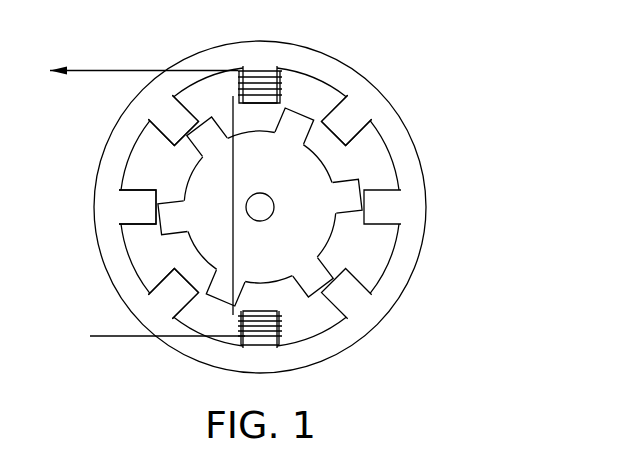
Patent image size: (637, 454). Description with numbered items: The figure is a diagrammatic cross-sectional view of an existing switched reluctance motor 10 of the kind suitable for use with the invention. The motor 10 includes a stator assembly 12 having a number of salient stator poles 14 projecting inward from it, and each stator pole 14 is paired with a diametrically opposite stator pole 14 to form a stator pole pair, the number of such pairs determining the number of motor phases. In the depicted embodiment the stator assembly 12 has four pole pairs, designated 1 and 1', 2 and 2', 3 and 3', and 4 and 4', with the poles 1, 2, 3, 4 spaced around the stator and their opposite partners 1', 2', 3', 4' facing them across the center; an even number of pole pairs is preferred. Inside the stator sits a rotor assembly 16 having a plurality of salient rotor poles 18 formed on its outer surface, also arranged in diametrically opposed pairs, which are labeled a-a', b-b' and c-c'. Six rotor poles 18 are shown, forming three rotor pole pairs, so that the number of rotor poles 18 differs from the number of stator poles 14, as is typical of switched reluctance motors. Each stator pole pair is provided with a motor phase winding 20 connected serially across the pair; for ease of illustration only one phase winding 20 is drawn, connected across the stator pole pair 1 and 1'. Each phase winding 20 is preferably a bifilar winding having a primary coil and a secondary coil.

The switched reluctance motor 10 is at (503, 310).
The stator assembly 12 is at (427, 218).
The stator pole 14 is at (150, 131).
The rotor assembly 16 is at (314, 168).
The rotor pole 18 is at (160, 227).
The motor phase winding 20 is at (112, 70).
The stator pole of pole pair 1-1' 1 is at (260, 72).
The stator pole of pole pair 2-2' 2 is at (172, 118).
The stator pole of pole pair 3-3' 3 is at (129, 207).
The stator pole of pole pair 4-4' 4 is at (173, 296).
The stator pole of pole pair 1- 1' is at (260, 337).
The stator pole of pole pair 2- 2' is at (349, 294).
The stator pole of pole pair 3- 3' is at (392, 207).
The stator pole of pole pair 4- 4' is at (347, 118).